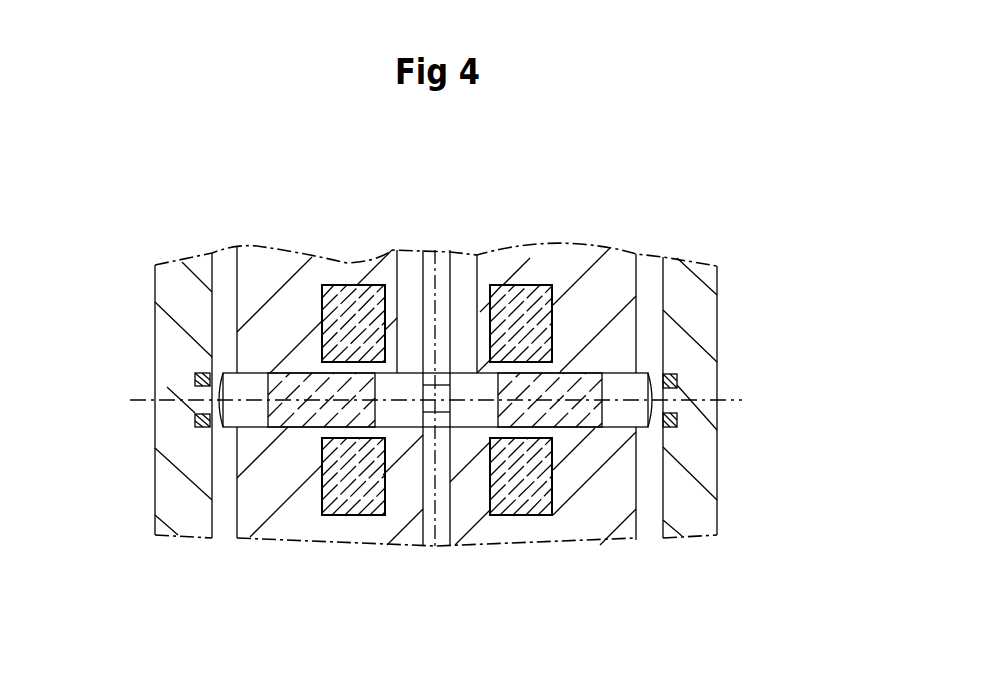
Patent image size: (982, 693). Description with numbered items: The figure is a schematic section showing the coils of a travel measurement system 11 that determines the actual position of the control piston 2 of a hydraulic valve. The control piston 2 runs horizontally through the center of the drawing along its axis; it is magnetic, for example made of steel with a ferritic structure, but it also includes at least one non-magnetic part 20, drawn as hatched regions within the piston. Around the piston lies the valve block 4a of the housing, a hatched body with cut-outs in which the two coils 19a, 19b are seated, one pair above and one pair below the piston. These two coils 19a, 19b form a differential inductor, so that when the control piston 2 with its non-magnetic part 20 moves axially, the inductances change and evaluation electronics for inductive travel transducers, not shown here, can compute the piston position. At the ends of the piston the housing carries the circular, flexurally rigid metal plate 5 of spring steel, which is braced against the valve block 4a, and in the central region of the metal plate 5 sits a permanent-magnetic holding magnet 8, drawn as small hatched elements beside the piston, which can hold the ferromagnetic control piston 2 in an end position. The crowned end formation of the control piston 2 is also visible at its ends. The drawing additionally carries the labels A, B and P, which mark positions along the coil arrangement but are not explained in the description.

The travel measurement system 11 is at (599, 168).
The control piston 2 is at (610, 356).
The valve block 4a is at (566, 263).
The metal plate 5 is at (178, 506).
The holding magnet 8 is at (186, 387).
The non-magnetic part 20 is at (286, 418).
The coil 19a is at (340, 512).
The coil 19b is at (513, 503).
The parting plane P is at (432, 538).
The first region A is at (412, 262).
The second region B is at (463, 262).